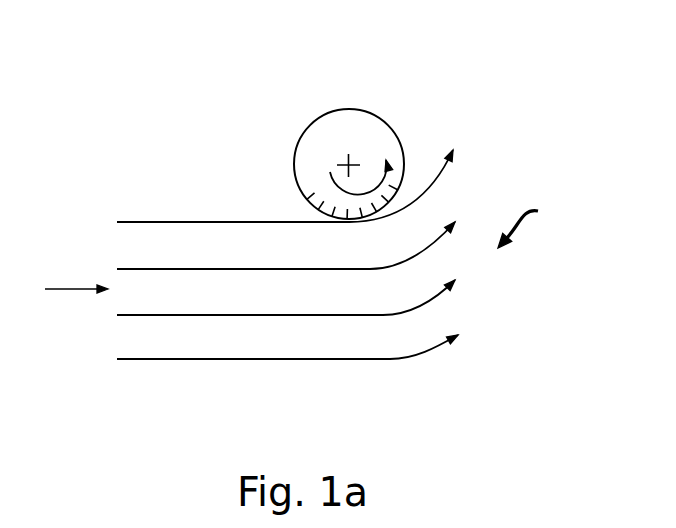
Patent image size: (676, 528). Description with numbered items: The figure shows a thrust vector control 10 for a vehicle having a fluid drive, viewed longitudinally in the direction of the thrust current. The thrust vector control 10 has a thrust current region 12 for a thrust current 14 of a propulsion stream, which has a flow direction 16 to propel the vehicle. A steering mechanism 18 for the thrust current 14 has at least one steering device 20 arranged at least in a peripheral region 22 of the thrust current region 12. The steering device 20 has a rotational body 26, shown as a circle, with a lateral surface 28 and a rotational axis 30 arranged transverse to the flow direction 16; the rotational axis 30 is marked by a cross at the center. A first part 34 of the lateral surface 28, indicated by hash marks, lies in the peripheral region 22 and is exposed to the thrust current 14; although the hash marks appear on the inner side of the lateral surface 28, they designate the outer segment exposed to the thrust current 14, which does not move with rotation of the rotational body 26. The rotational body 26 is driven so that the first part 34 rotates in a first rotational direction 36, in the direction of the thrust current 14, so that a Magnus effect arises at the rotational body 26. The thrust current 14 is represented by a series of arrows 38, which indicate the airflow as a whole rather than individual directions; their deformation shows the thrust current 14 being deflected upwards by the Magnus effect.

The thrust vector control 10 is at (102, 132).
The thrust current region 12 is at (230, 306).
The thrust current 14 is at (537, 224).
The flow direction 16 is at (77, 288).
The steering mechanism 18 is at (267, 168).
The steering device 20 is at (342, 107).
The peripheral region 22 is at (240, 222).
The rotational body 26 is at (290, 138).
The lateral surface 28 is at (401, 152).
The rotational axis 30 is at (342, 162).
The first part of the lateral surface 34 is at (402, 180).
The first rotational direction 36 is at (373, 172).
The arrows 38 is at (345, 360).